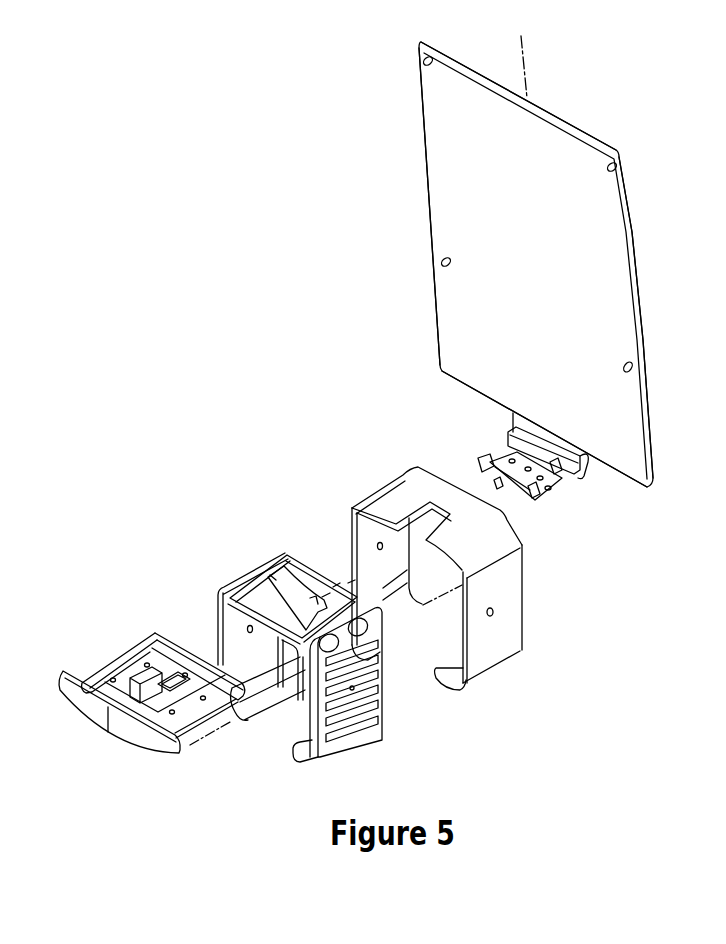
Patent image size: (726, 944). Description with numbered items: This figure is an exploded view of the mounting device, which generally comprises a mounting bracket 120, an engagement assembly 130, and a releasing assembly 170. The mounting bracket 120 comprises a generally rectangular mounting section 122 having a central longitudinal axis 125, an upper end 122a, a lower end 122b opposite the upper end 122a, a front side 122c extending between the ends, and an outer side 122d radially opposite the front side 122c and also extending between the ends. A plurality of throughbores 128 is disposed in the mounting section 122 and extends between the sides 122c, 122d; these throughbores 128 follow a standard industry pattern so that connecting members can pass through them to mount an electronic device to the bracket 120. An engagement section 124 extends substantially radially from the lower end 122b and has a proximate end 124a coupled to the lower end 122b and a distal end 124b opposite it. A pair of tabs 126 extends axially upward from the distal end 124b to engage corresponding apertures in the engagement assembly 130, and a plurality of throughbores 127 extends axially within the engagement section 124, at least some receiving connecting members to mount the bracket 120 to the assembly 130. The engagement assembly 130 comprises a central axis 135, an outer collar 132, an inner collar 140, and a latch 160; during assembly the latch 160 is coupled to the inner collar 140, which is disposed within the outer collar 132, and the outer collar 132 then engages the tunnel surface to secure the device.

The mounting bracket 120 is at (641, 281).
The mounting section 122 is at (420, 296).
The upper end 122a is at (579, 128).
The lower end 122b is at (641, 498).
The front side 122c is at (443, 123).
The outer side 122d is at (632, 262).
The engagement section 124 is at (503, 430).
The proximate end 124a is at (539, 431).
The distal end 124b is at (478, 462).
The central longitudinal axis 125 is at (526, 62).
The tabs 126 is at (498, 486).
The throughbores 127 is at (549, 481).
The throughbores 128 is at (424, 73).
The engagement assembly 130 is at (412, 458).
The outer collar 132 is at (537, 661).
The central axis 135 is at (222, 731).
The inner collar 140 is at (363, 745).
The latch 160 is at (300, 572).
The releasing assembly 170 is at (128, 606).